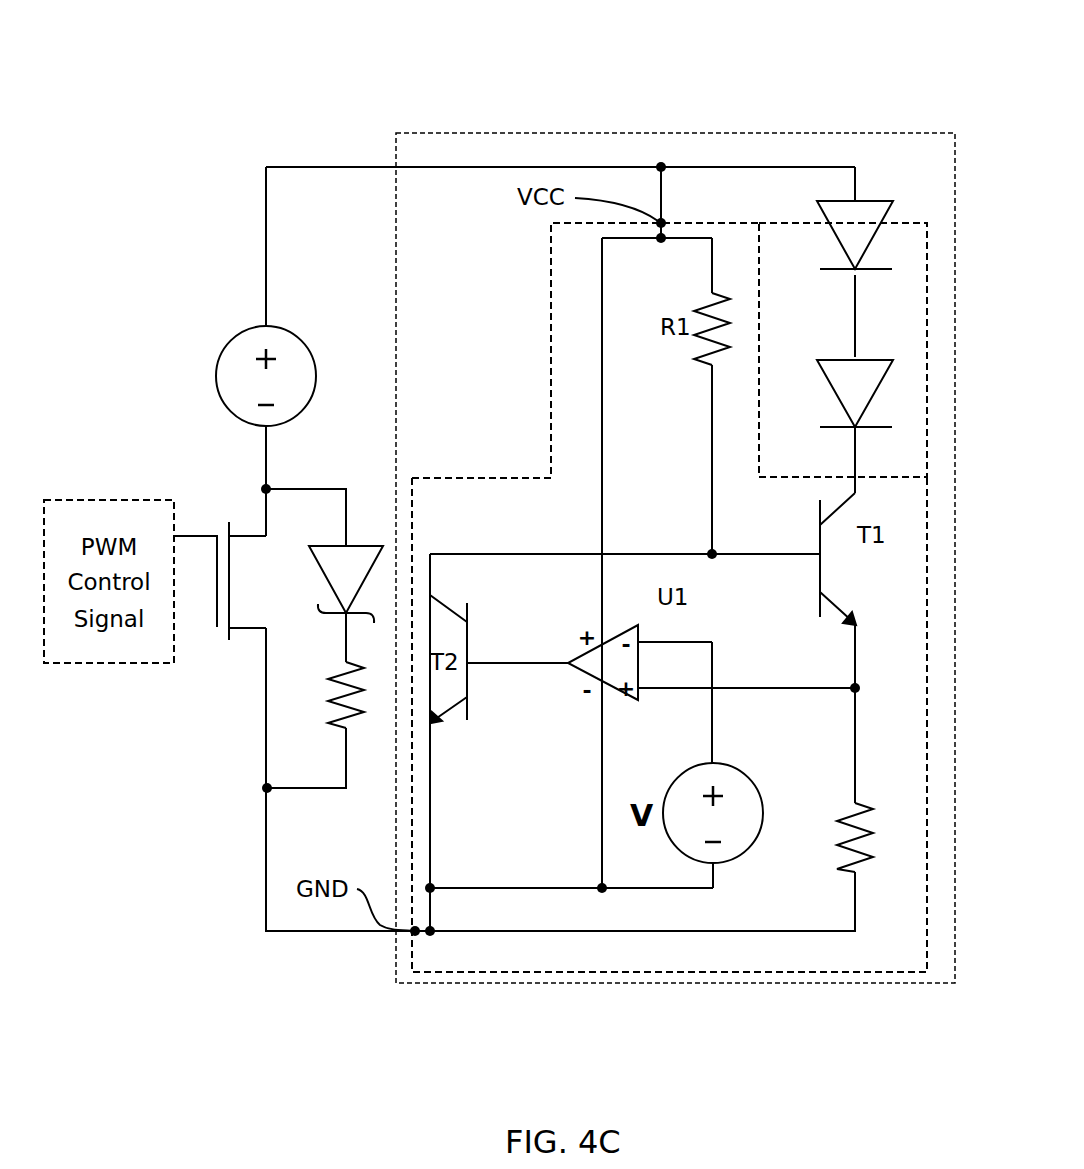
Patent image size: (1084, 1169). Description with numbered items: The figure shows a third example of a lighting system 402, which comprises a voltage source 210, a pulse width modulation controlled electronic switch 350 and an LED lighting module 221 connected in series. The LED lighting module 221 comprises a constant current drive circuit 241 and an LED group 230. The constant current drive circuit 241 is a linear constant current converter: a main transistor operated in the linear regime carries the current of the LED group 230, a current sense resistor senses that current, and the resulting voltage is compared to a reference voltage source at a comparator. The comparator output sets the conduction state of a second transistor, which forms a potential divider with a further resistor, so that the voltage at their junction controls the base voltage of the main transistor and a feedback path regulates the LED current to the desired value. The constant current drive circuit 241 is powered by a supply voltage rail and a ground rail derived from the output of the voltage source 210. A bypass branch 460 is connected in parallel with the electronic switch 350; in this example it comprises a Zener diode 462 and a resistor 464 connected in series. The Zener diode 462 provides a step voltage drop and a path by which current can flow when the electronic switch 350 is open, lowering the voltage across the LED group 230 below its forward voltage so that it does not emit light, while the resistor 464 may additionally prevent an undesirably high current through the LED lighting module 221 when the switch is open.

The lighting system 402 is at (789, 96).
The voltage source 210 is at (232, 330).
The constant current drive circuit 241 is at (517, 474).
The LED group 230 is at (818, 307).
The Zener diode 462 is at (316, 580).
The resistor 464 is at (322, 684).
The electronic switch 350 is at (226, 660).
The bypass branch 460 is at (330, 800).
The LED lighting module 221 is at (606, 986).